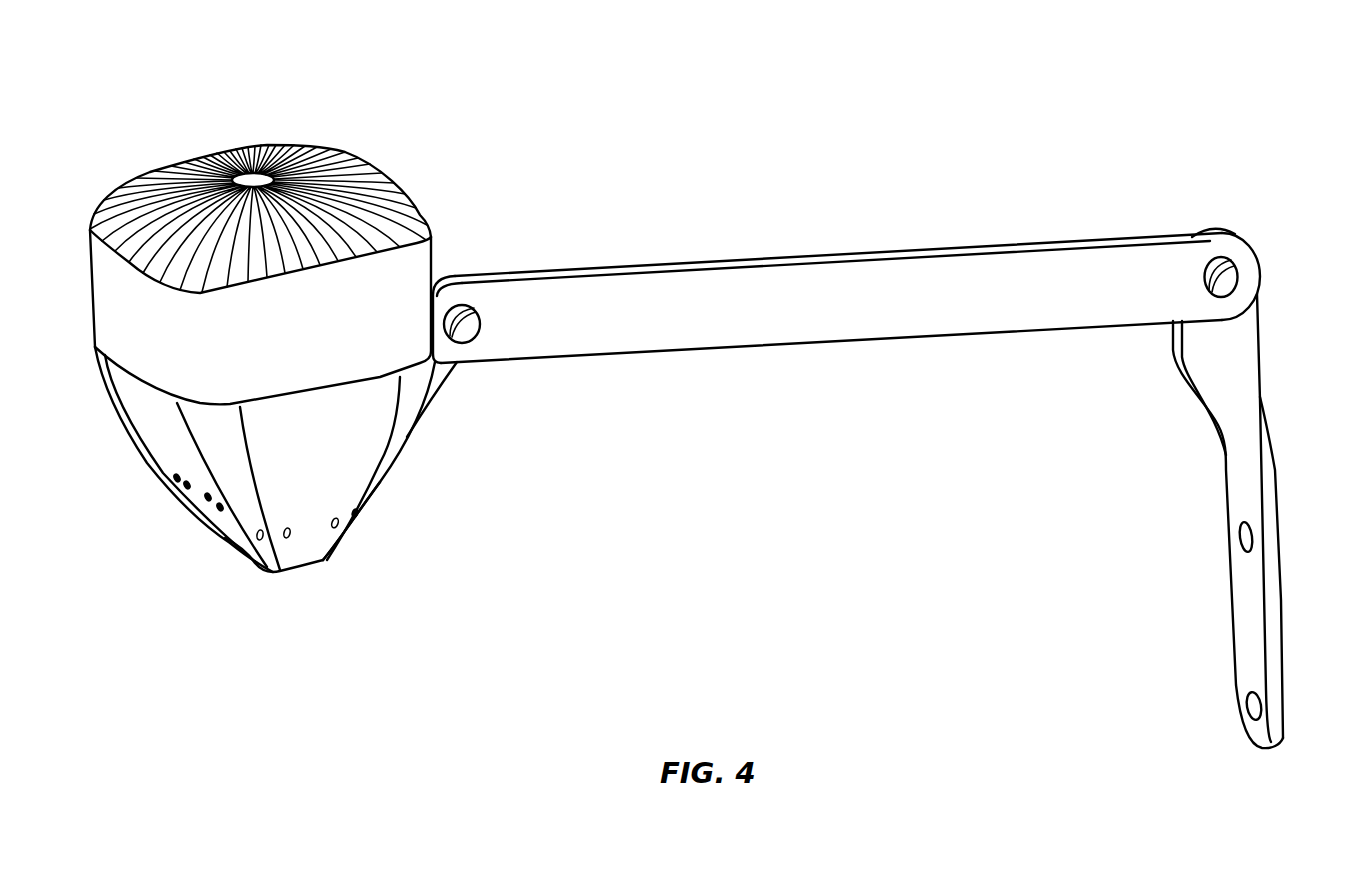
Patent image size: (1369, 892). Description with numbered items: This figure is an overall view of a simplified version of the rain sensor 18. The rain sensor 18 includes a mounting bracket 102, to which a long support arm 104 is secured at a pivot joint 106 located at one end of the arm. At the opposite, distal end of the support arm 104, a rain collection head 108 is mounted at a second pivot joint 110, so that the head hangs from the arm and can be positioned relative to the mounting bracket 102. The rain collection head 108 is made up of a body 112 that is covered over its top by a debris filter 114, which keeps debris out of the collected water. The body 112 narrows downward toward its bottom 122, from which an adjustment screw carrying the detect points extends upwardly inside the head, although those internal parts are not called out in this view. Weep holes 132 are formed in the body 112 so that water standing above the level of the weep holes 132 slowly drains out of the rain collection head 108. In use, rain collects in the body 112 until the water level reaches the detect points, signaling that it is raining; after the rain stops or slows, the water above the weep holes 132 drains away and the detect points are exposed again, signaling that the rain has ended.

The rain sensor 18 is at (790, 105).
The mounting bracket 102 is at (1272, 452).
The support arm 104 is at (748, 290).
The pivot joint 106 is at (1242, 215).
The rain collection head 108 is at (380, 139).
The second pivot joint 110 is at (453, 268).
The body 112 is at (420, 438).
The debris filter 114 is at (145, 172).
The bottom 122 is at (374, 503).
The weep holes 132 is at (338, 530).